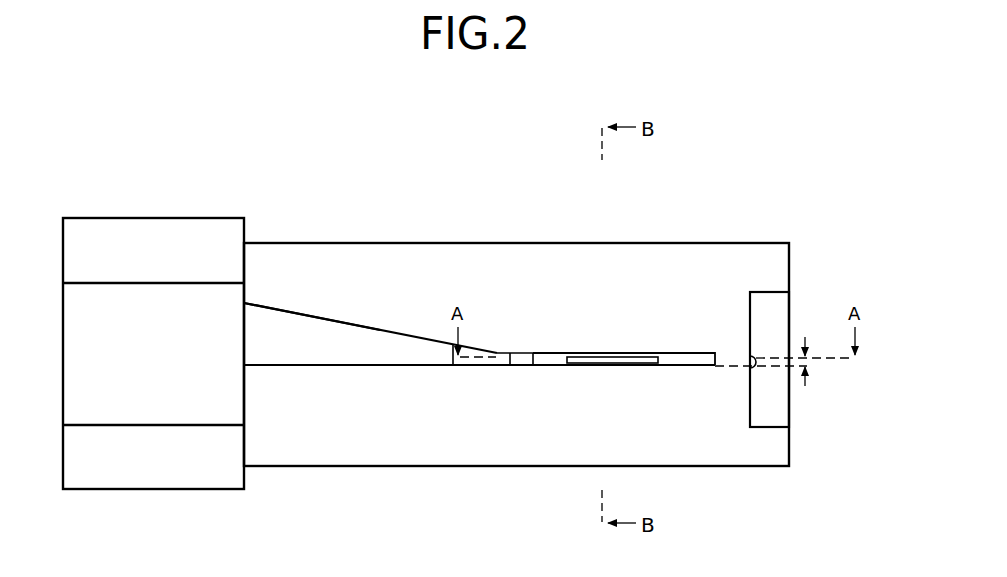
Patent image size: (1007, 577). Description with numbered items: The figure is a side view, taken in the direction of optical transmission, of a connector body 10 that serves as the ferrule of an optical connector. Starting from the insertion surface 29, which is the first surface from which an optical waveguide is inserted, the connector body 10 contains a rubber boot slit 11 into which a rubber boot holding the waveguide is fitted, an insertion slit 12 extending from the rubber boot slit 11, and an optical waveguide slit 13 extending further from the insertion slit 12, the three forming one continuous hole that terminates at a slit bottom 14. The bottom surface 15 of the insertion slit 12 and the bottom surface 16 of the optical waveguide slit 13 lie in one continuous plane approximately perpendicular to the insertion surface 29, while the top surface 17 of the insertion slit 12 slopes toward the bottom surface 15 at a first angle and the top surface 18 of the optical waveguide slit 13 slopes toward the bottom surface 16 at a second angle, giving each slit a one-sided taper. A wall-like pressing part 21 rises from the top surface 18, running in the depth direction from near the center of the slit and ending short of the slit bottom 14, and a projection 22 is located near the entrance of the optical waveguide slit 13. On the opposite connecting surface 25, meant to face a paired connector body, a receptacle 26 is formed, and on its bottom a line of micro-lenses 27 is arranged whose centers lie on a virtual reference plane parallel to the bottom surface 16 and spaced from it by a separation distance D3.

The connector body 10 is at (409, 157).
The rubber boot slit 11 is at (154, 283).
The insertion slit 12 is at (377, 328).
The optical waveguide slit 13 is at (553, 353).
The slit bottom 14 is at (719, 356).
The bottom surface of the insertion slit 15 is at (352, 365).
The bottom surface of the optical waveguide slit 16 is at (685, 365).
The top surface of the insertion slit 17 is at (290, 315).
The top surface of the optical waveguide slit 18 is at (663, 353).
The pressing part 21 is at (625, 353).
The projection 22 is at (522, 353).
The connecting surface 25 is at (789, 258).
The receptacle 26 is at (750, 310).
The micro-lenses 27 is at (757, 364).
The insertion surface 29 is at (63, 248).
The separation distance D3 is at (809, 362).